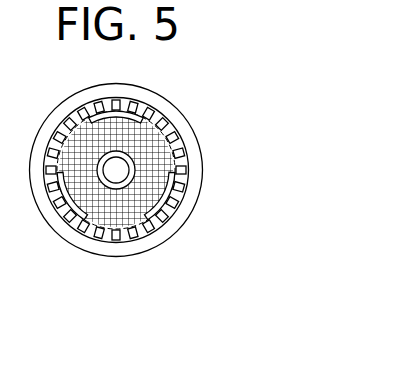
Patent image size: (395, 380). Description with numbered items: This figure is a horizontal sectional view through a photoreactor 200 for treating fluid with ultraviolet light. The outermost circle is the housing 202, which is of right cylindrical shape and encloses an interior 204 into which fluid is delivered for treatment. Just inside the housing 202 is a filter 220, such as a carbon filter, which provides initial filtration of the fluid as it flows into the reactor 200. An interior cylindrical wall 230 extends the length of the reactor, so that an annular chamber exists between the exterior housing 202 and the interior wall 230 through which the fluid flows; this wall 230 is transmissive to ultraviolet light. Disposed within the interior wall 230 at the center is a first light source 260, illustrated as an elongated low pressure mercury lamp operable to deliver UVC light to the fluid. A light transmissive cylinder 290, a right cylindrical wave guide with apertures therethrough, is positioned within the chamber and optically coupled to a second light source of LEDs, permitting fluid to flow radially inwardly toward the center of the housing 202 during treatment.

The photoreactor 200 is at (206, 122).
The housing 202 is at (175, 228).
The interior 204 is at (148, 183).
The filter 220 is at (137, 237).
The interior cylindrical wall 230 is at (133, 147).
The first light source 260 is at (110, 172).
The light transmissive cylinder 290 is at (123, 113).